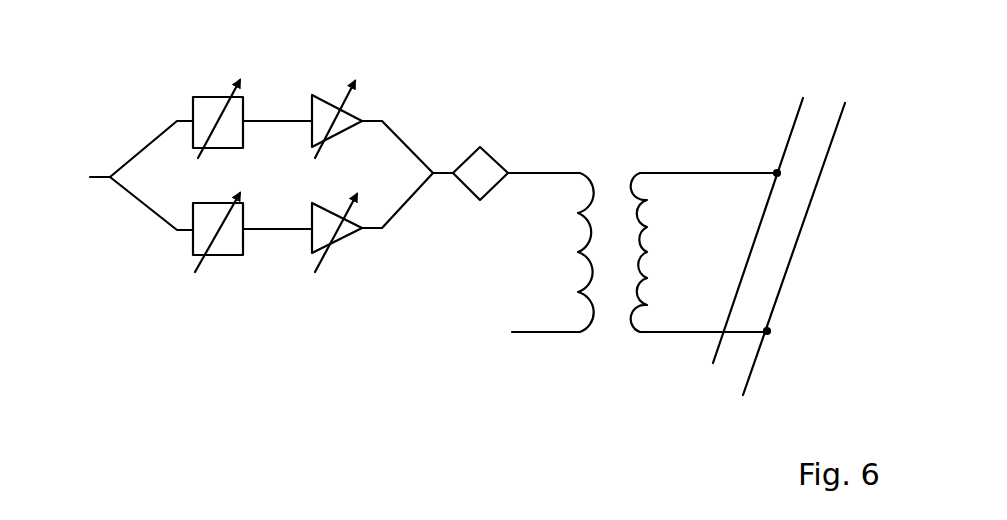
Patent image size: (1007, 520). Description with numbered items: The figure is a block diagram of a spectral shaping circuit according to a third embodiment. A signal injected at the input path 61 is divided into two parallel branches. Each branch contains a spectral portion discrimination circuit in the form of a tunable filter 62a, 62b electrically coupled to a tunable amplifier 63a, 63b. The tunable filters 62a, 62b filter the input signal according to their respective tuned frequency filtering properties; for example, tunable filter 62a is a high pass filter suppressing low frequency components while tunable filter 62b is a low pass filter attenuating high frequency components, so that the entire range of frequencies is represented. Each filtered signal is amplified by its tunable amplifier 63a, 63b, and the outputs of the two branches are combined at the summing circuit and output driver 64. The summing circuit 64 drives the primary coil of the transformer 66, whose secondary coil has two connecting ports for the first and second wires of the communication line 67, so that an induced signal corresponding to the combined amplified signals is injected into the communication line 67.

The input path 61 is at (116, 175).
The tunable filter 62a is at (192, 103).
The tunable filter 62b is at (192, 240).
The tunable amplifier 63a is at (333, 105).
The tunable amplifier 63b is at (335, 240).
The summing circuit and output driver 64 is at (494, 160).
The transformer 66 is at (668, 338).
The communication line 67 is at (860, 100).